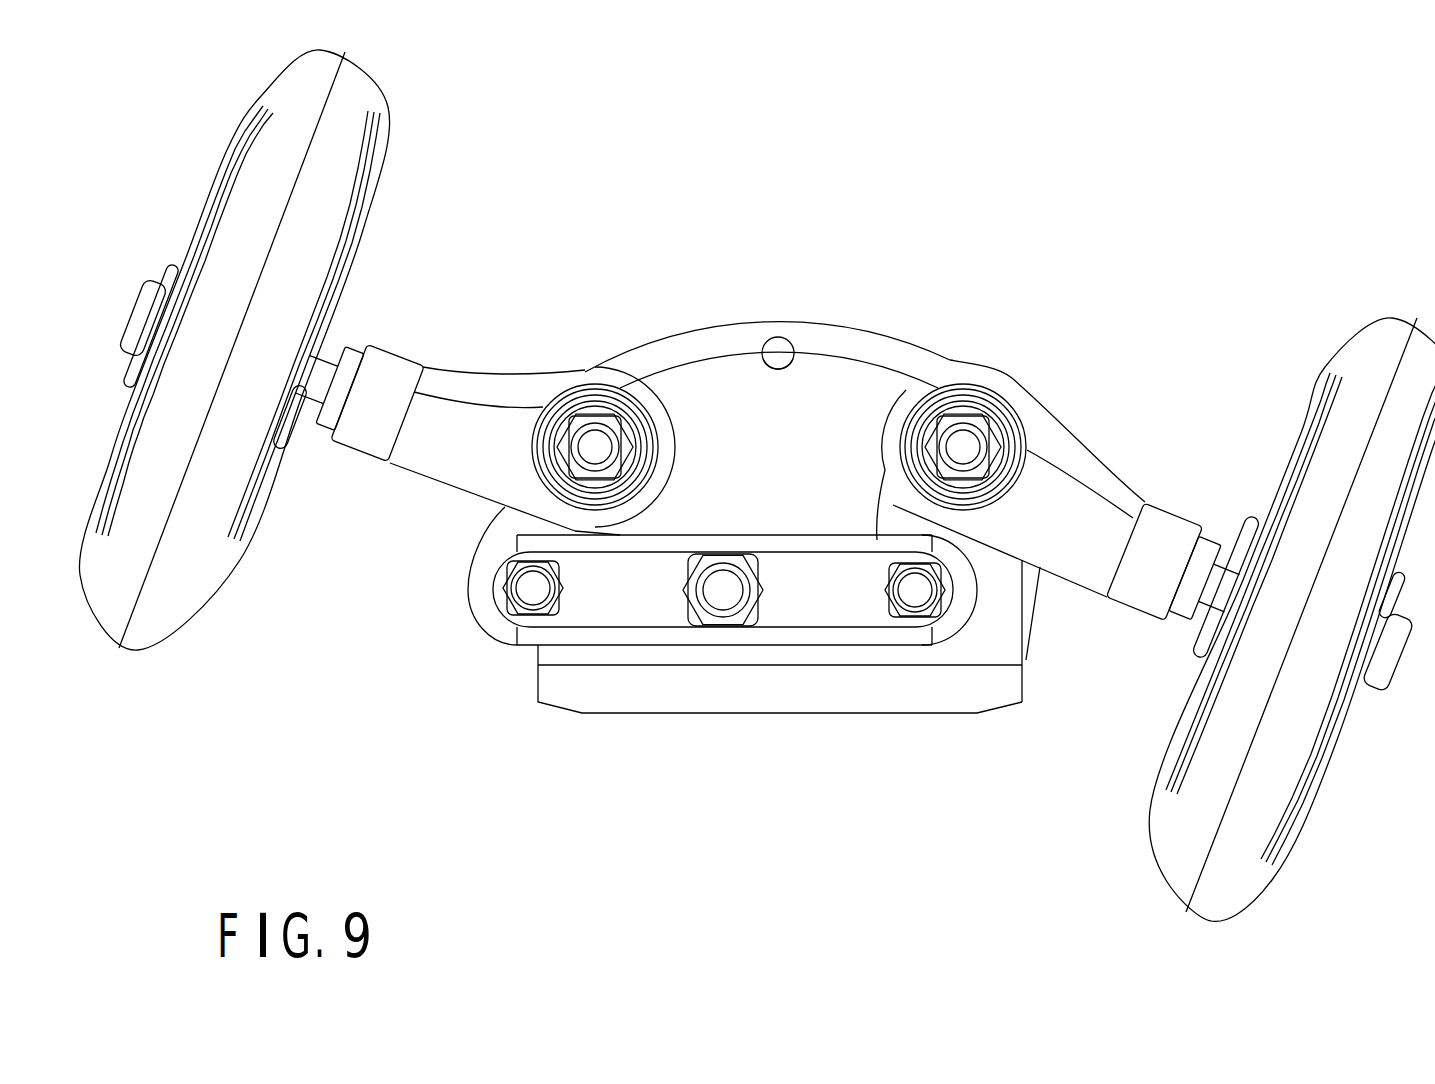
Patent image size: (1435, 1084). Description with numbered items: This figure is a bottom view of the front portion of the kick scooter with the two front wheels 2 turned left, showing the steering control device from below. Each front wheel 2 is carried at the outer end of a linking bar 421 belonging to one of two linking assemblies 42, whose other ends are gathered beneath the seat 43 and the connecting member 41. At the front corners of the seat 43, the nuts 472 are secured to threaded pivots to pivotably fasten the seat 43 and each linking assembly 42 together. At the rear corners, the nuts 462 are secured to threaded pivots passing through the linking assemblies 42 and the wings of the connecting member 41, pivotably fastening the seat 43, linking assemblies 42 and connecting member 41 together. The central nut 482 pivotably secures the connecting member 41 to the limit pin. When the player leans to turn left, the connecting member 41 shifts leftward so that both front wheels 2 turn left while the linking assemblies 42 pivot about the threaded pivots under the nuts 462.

The front wheel 2 is at (1365, 360).
The connecting member 41 is at (623, 608).
The linking assembly 42 is at (897, 530).
The seat 43 is at (787, 323).
The linking bar 421 is at (420, 455).
The nut 462 is at (533, 613).
The nut 472 is at (595, 432).
The nut 482 is at (724, 608).